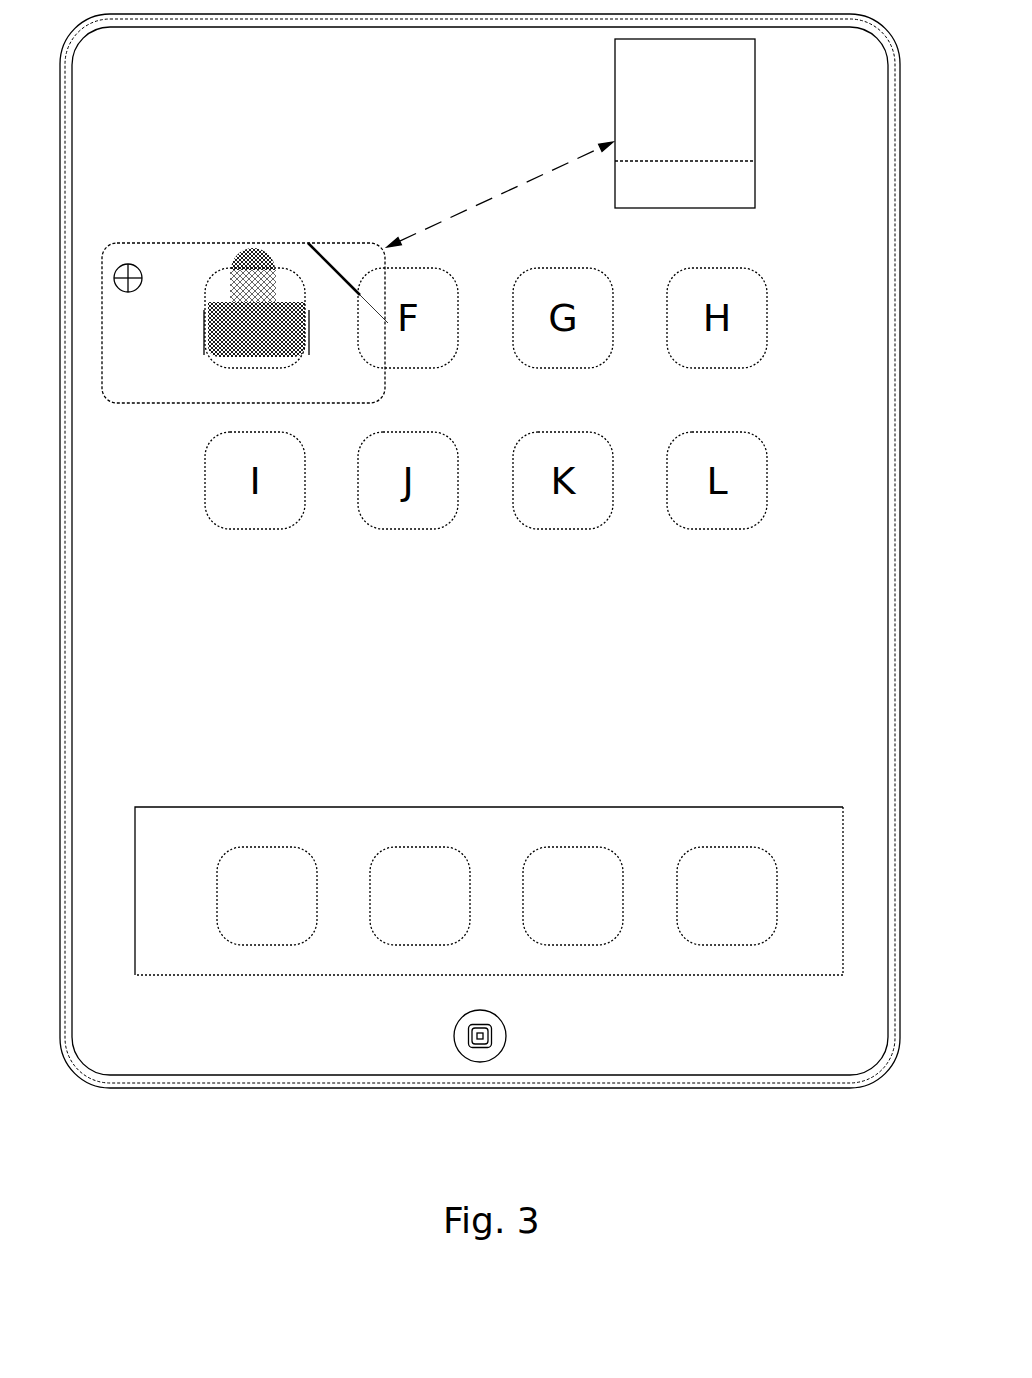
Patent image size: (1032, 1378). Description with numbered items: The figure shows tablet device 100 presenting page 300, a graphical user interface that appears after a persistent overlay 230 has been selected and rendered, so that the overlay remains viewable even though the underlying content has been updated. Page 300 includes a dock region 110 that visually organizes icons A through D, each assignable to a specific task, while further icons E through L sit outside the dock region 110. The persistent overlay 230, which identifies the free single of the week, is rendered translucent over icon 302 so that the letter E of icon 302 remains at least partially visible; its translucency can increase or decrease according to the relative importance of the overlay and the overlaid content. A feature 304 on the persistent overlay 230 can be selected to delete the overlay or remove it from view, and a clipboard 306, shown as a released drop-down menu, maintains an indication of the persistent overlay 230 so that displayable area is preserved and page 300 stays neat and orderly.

The tablet device 100 is at (652, 1156).
The dock region 110 is at (607, 792).
The page 300 is at (480, 551).
The icon 302 is at (211, 263).
The feature 304 is at (128, 307).
The clipboard 306 is at (571, 143).
The persistent overlay 230 is at (685, 146).